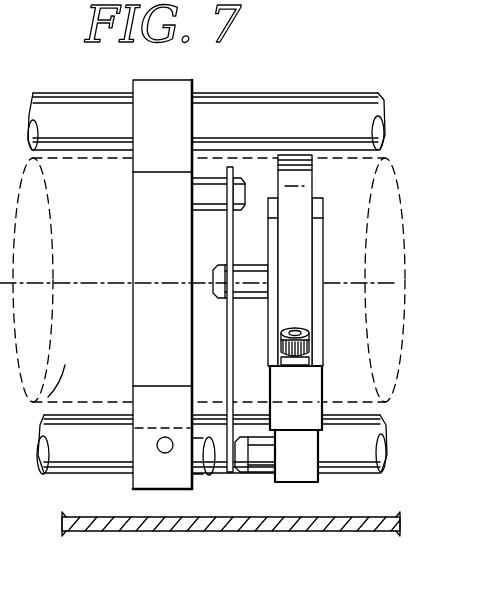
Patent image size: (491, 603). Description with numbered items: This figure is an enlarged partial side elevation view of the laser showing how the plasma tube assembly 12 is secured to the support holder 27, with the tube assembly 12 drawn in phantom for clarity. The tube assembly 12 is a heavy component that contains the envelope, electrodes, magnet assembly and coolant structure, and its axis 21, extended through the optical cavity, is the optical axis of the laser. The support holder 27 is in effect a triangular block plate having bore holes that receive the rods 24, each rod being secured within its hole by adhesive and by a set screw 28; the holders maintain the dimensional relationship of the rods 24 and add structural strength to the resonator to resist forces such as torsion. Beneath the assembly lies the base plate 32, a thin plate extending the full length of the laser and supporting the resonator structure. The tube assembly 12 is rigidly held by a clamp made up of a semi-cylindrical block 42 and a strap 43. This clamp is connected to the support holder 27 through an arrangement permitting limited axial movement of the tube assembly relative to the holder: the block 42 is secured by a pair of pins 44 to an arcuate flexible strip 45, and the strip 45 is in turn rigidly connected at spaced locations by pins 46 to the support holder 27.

The plasma tube assembly 12 is at (42, 400).
The axis 21 is at (90, 262).
The rods 24 is at (277, 112).
The support holder 27 is at (134, 205).
The set screw 28 is at (167, 455).
The base plate 32 is at (265, 530).
The semi-cylindrical block 42 is at (312, 385).
The strap 43 is at (303, 240).
The pins 44 is at (246, 273).
The arcuate flexible strip 45 is at (230, 330).
The pins 46 is at (206, 192).